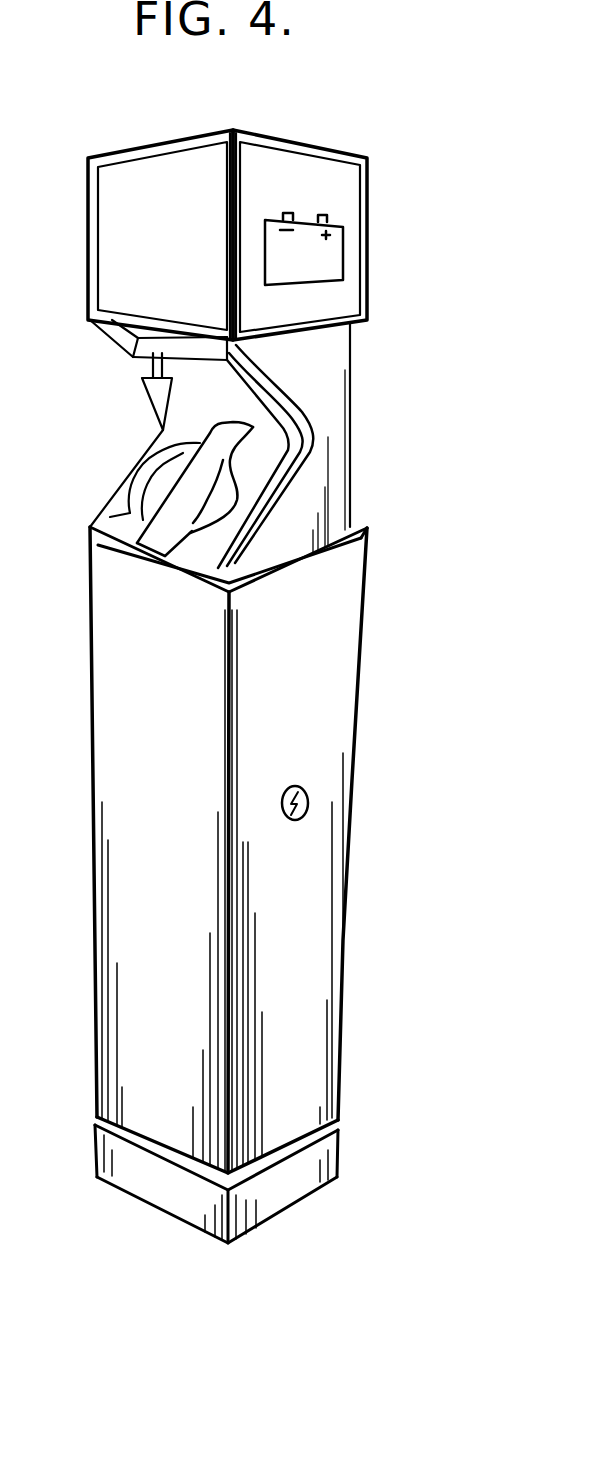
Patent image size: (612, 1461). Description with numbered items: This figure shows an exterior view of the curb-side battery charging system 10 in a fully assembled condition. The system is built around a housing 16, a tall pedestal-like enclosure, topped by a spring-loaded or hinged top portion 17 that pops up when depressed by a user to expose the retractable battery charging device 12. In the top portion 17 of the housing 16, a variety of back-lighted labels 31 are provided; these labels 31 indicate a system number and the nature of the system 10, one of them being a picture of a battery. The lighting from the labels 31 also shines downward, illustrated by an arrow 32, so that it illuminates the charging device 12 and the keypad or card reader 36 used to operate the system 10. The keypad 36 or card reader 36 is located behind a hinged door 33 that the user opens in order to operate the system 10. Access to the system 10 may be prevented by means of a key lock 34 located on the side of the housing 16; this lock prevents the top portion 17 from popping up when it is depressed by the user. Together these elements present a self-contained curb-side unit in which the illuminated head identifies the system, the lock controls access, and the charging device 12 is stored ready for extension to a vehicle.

The curb-side battery charging system 10 is at (327, 1260).
The retractable battery charging device 12 is at (150, 519).
The housing 16 is at (343, 1035).
The top portion 17 is at (368, 277).
The back-lighted labels 31 is at (143, 202).
The arrow 32 is at (160, 405).
The hinged door 33 is at (237, 410).
The key lock 34 is at (307, 810).
The keypad or card reader 36 is at (380, 414).